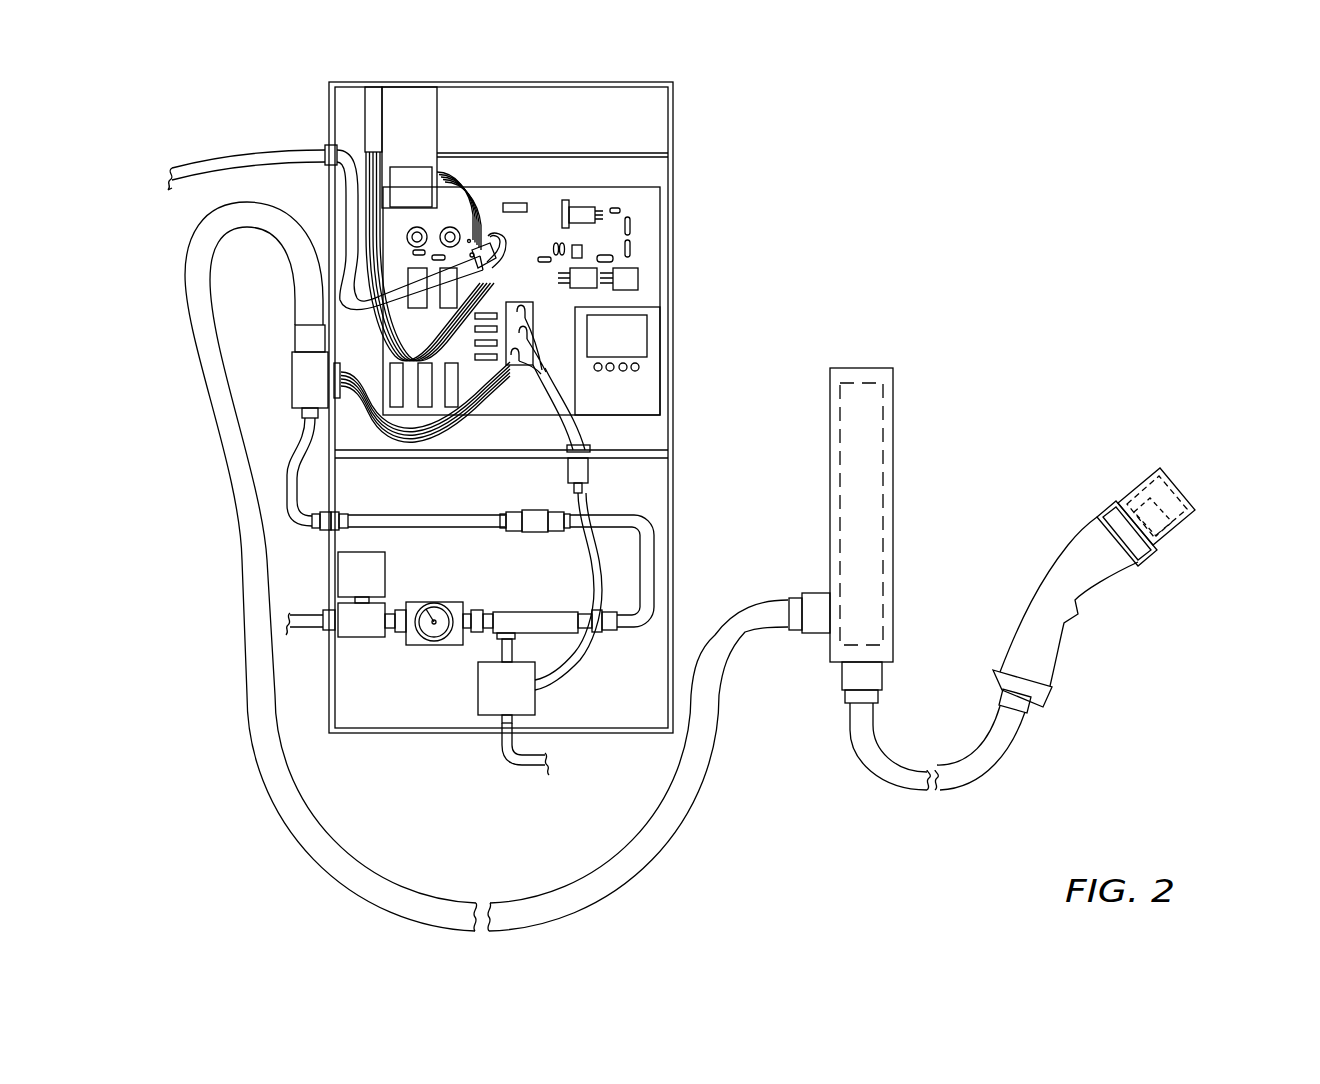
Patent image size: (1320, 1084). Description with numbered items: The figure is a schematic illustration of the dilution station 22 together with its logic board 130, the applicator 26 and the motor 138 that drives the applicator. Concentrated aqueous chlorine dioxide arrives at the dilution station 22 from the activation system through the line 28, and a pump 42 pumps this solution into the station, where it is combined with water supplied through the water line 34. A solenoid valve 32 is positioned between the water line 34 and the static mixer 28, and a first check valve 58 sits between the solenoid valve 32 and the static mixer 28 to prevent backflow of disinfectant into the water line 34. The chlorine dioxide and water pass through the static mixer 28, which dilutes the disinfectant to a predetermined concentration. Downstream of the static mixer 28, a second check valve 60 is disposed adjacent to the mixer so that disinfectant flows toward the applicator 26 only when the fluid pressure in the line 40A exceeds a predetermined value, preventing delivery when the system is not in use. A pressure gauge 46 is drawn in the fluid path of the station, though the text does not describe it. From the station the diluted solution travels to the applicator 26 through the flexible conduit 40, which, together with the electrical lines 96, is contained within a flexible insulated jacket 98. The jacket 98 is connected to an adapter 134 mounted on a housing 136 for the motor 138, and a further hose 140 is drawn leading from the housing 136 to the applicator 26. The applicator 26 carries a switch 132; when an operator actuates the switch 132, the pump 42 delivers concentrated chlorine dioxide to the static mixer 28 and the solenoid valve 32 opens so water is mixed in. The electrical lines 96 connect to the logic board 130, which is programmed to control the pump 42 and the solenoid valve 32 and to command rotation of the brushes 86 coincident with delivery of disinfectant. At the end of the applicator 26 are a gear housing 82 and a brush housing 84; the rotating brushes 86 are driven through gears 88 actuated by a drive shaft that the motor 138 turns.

The dilution station 22 is at (690, 106).
The logic board 130 is at (640, 185).
The electrical lines 96 is at (350, 360).
The flexible conduit/line 40 is at (303, 445).
The line 40A is at (655, 545).
The second check valve 60 is at (538, 508).
The solenoid valve 32 is at (330, 599).
The water line 34 is at (300, 628).
The pressure gauge 46 is at (433, 635).
The first check valve 58 is at (477, 608).
The static mixer 28 is at (535, 607).
The pump 42 is at (478, 682).
The flexible insulated jacket 98 is at (245, 472).
The adapter 134 is at (812, 592).
The housing 136 is at (830, 372).
The motor 138 is at (840, 440).
The hose 140 is at (997, 765).
The applicator 26 is at (1035, 545).
The switch 132 is at (1078, 615).
The gear housing 82 is at (1094, 494).
The brush housing 84 is at (1184, 477).
The rotating brushes 86 is at (1160, 515).
The gears 88 is at (1150, 555).